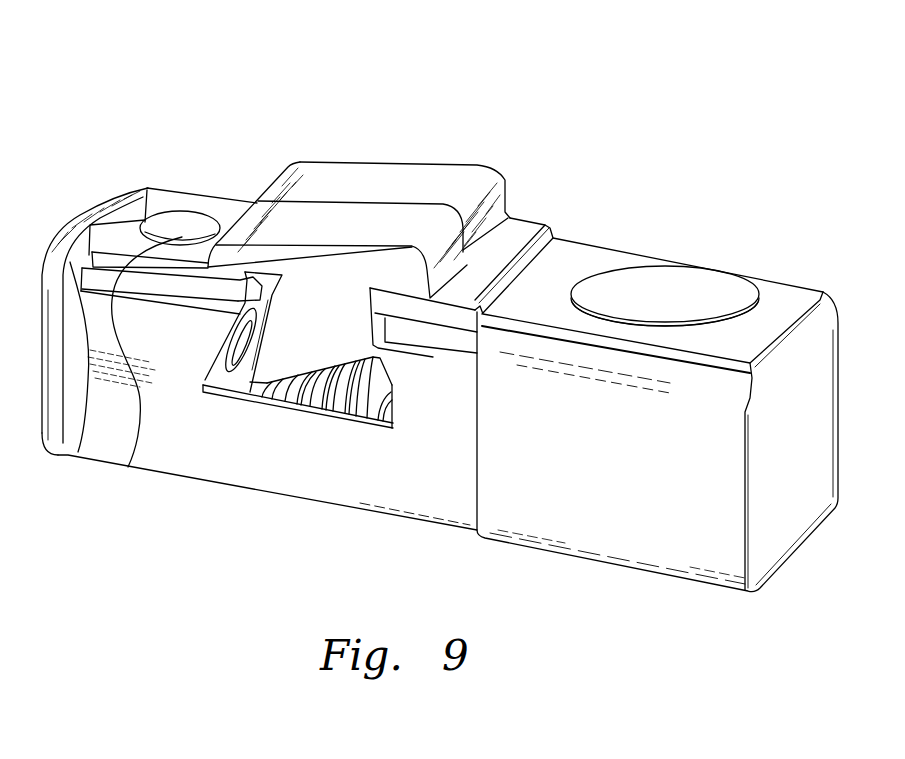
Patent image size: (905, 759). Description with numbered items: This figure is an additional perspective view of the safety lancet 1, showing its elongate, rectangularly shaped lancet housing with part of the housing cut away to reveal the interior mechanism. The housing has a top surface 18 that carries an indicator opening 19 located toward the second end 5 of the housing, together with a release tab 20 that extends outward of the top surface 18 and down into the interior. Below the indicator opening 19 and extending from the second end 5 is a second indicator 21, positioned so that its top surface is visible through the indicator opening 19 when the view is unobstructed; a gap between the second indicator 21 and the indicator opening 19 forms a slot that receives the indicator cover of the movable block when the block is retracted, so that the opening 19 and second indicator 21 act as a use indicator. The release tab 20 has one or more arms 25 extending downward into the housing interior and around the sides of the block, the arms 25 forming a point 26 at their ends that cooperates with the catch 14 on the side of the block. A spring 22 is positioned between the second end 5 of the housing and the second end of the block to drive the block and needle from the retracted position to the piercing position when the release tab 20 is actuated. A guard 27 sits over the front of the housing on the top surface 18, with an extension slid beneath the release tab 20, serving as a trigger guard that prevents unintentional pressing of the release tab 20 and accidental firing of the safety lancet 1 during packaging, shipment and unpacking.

The safety lancet 1 is at (613, 102).
The second end 5 is at (88, 223).
The catch 14 is at (385, 408).
The top surface 18 is at (167, 200).
The indicator opening 19 is at (193, 222).
The release tab 20 is at (398, 177).
The second indicator 21 is at (133, 452).
The spring 22 is at (223, 385).
The arms 25 is at (320, 302).
The point 26 is at (260, 378).
The guard 27 is at (573, 257).